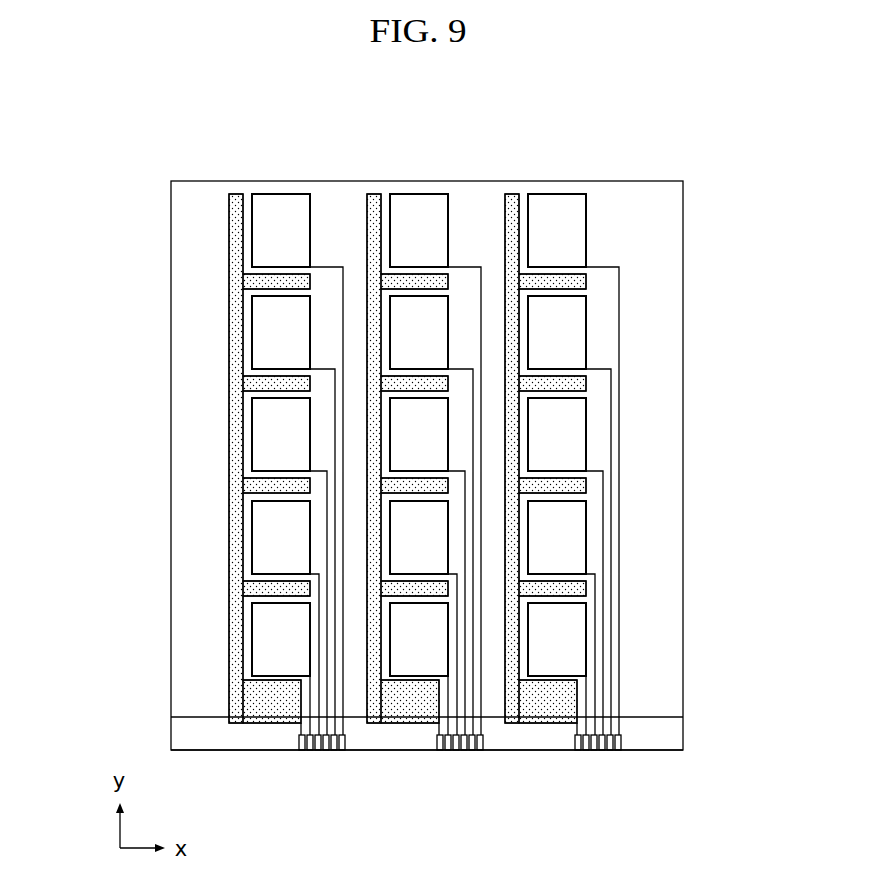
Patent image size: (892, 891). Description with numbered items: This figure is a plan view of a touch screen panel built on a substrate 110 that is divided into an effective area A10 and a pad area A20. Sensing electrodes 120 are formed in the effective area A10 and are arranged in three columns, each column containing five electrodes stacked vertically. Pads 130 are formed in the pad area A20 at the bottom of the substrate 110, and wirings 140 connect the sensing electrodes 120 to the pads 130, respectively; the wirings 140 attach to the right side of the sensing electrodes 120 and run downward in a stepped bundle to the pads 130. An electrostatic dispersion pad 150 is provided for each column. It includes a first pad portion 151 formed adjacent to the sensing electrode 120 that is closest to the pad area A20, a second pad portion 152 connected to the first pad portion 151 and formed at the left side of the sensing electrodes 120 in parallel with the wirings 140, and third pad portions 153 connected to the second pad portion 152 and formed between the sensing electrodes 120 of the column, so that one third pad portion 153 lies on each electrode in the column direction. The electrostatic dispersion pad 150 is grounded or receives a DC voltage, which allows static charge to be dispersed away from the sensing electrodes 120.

The substrate 110 is at (702, 447).
The sensing electrodes 120 is at (262, 334).
The pads 130 is at (346, 752).
The wirings 140 is at (624, 697).
The electrostatic dispersion pad 150 is at (511, 178).
The first pad portion 151 is at (262, 726).
The second pad portion 152 is at (237, 437).
The third pad portions 153 is at (282, 485).
The effective area A10 is at (663, 371).
The pad area A20 is at (403, 742).